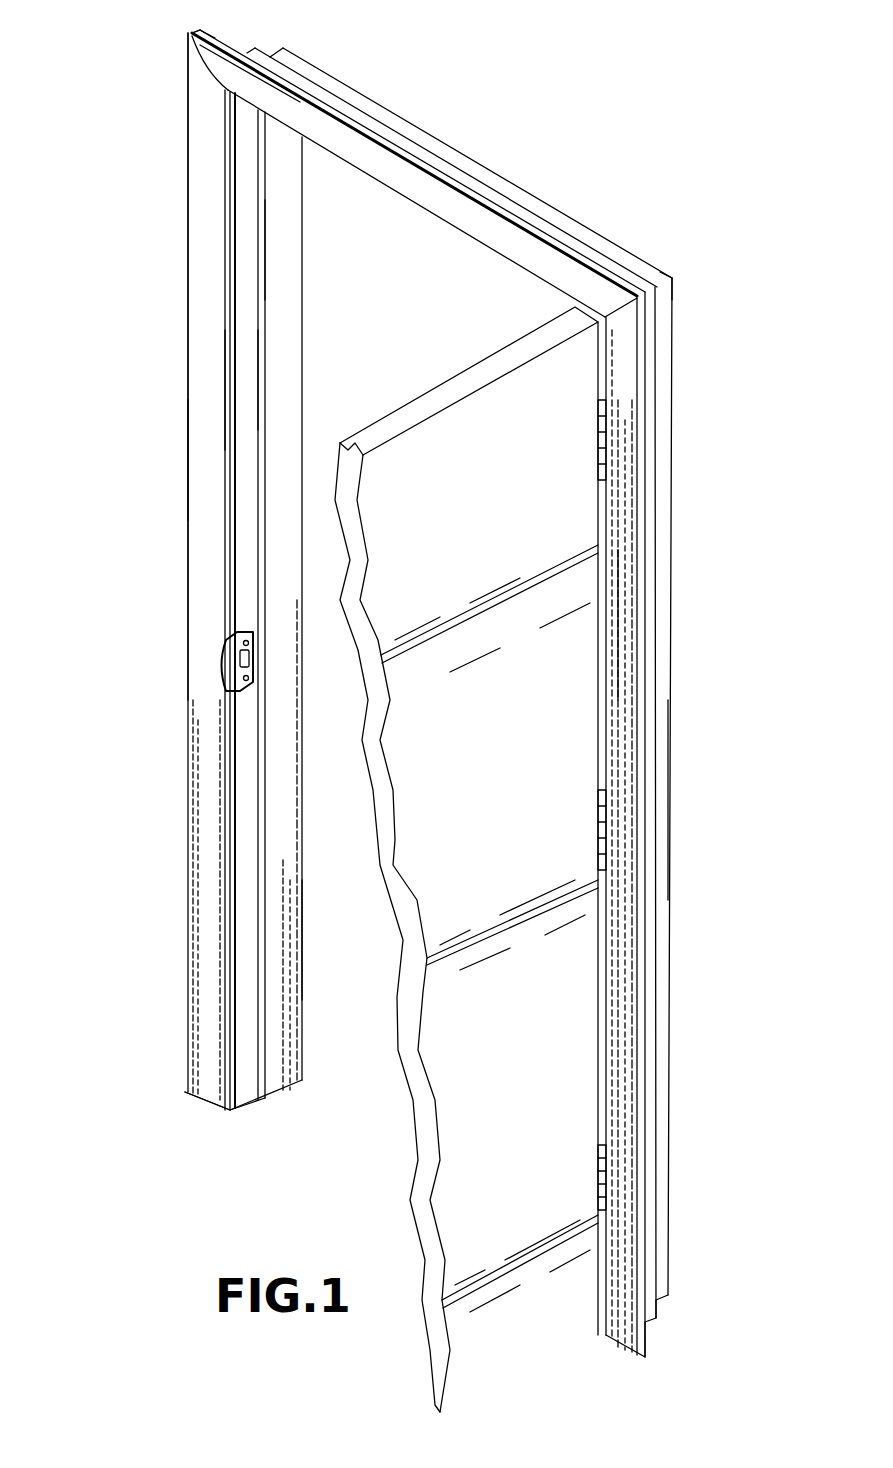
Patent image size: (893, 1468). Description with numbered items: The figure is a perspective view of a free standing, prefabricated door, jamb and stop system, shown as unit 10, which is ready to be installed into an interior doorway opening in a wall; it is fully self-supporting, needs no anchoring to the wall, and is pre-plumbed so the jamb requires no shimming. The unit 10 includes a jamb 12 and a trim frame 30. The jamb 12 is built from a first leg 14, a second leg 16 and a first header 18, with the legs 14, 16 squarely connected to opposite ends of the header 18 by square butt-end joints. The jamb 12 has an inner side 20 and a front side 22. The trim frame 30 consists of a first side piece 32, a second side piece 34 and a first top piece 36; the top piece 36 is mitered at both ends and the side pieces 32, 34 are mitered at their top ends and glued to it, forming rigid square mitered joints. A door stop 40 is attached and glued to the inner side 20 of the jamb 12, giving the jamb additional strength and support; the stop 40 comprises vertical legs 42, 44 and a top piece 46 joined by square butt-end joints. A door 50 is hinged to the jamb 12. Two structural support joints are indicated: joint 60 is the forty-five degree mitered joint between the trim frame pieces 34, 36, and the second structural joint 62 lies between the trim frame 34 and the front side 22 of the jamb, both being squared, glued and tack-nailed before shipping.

The unit 10 is at (100, 175).
The jamb 12 is at (240, 325).
The first leg 14 is at (248, 1000).
The second leg 16 is at (648, 1097).
The first header 18 is at (428, 152).
The inner side 20 is at (248, 381).
The front side 22 is at (228, 386).
The trim frame 30 is at (213, 320).
The first side piece 32 is at (210, 457).
The second side piece 34 is at (625, 626).
The first top piece 36 is at (360, 150).
The door stop 40 is at (278, 250).
The vertical leg 42 is at (280, 933).
The vertical leg 44 is at (665, 819).
The top piece 46 is at (500, 193).
The door 50 is at (545, 370).
The structural support joint 60 is at (210, 52).
The second structural joint 62 is at (228, 1092).